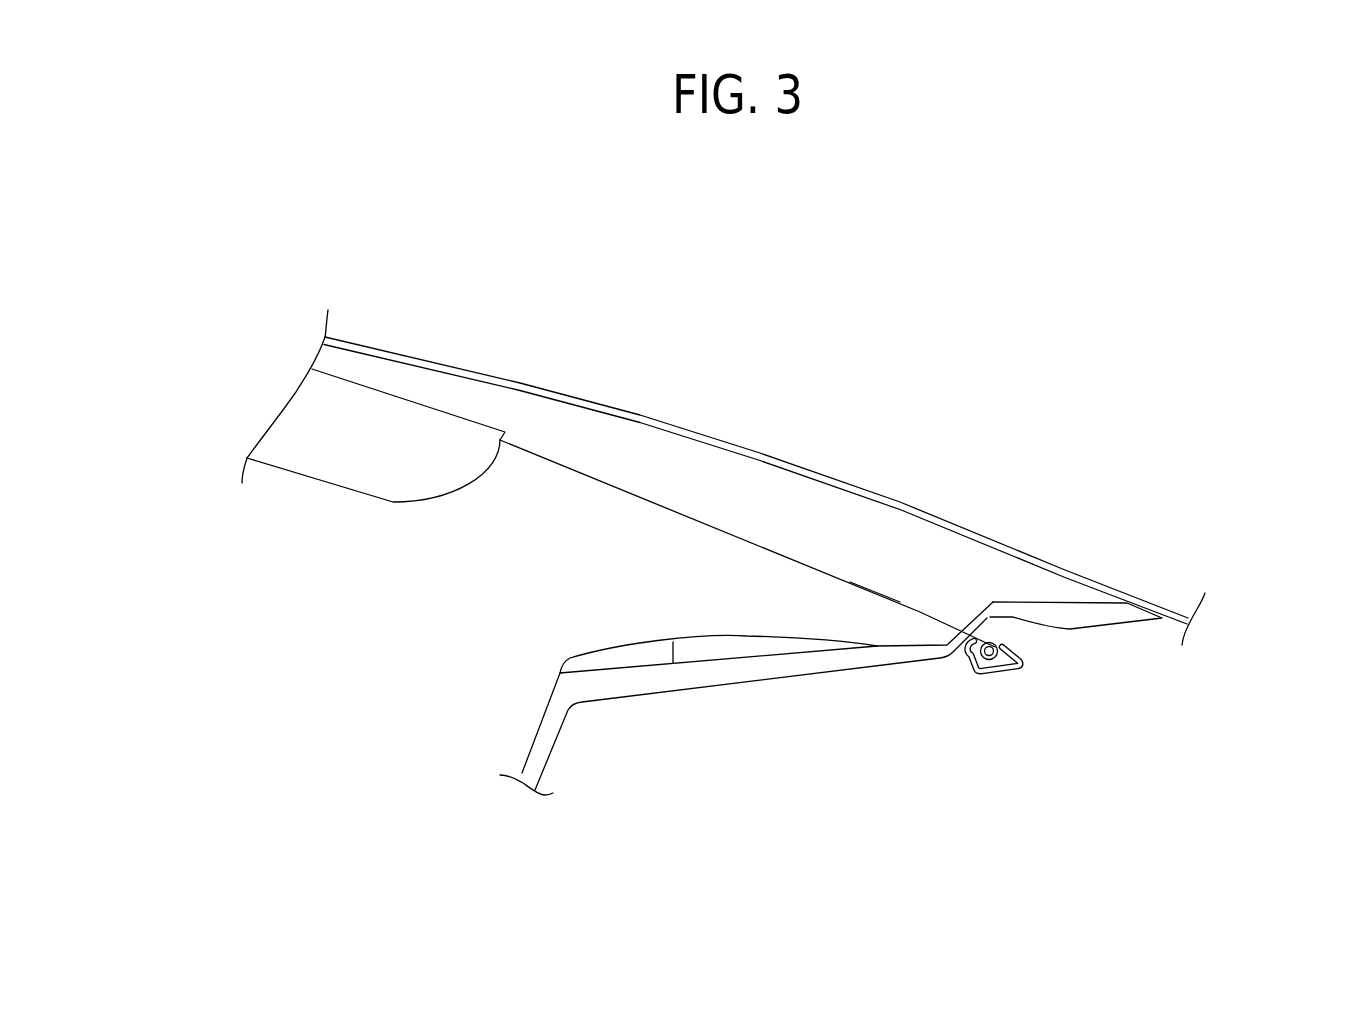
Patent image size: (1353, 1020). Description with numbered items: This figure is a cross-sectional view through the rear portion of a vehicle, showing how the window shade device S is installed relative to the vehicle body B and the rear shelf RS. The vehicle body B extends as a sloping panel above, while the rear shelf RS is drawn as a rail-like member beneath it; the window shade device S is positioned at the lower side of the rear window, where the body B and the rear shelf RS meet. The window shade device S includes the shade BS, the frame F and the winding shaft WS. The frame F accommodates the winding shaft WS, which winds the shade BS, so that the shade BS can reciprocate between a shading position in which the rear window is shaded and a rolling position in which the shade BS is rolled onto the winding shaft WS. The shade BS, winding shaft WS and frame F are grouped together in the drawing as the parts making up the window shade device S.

The vehicle body B is at (295, 412).
The window shade device S is at (1066, 401).
The shade BS is at (848, 582).
The winding shaft WS is at (990, 641).
The frame F is at (1023, 660).
The rear shelf RS is at (670, 678).